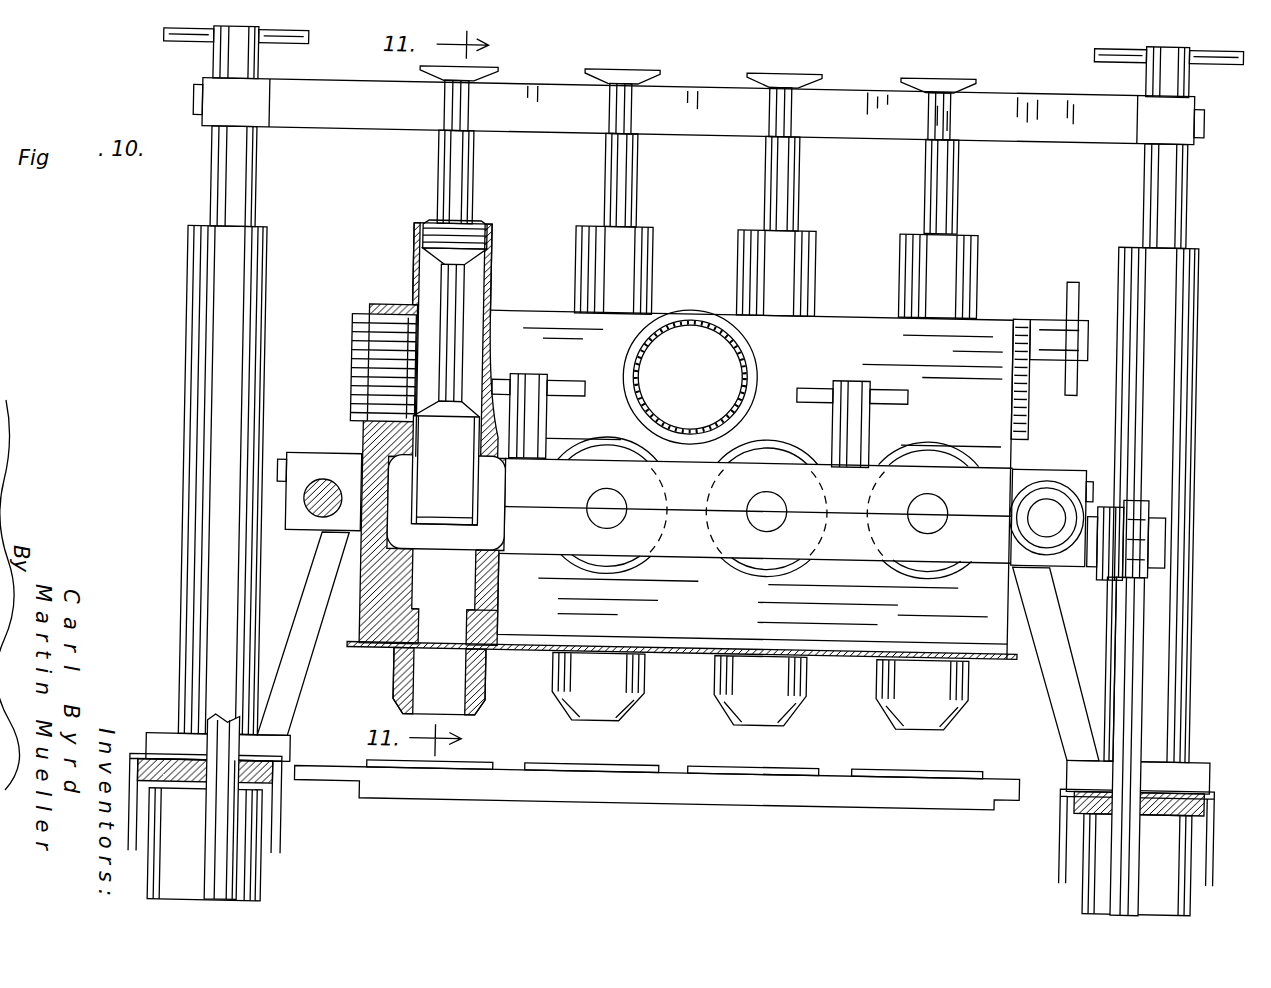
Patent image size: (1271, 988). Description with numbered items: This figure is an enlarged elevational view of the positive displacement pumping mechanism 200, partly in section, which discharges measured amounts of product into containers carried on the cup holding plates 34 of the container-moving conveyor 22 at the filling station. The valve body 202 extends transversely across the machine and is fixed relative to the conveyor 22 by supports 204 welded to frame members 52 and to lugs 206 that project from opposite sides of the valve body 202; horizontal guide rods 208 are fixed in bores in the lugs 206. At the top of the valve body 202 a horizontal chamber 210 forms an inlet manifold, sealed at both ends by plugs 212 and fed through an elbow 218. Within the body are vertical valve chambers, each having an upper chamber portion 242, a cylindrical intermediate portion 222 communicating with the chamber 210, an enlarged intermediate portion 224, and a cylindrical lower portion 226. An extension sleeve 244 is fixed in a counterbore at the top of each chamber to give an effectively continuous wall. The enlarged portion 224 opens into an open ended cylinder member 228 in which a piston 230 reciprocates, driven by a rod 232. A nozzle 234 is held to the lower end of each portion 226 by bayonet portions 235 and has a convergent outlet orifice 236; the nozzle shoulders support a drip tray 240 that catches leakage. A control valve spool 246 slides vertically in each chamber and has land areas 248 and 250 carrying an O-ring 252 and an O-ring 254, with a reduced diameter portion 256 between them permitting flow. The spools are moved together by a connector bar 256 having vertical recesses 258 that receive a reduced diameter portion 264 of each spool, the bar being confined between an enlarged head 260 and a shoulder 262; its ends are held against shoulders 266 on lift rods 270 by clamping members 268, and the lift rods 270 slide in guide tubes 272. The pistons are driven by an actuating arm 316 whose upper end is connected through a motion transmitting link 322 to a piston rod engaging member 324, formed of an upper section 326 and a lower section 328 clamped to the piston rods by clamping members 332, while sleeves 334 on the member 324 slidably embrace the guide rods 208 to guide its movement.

The container-moving conveyor 22 is at (516, 815).
The cup holding plates 34 is at (690, 800).
The frame members 52 is at (290, 830).
The positive displacement pumping mechanism 200 is at (380, 206).
The valve body 202 is at (990, 318).
The supports 204 is at (310, 688).
The lugs 206 is at (298, 459).
The guide rods 208 is at (318, 508).
The chamber 210 is at (498, 335).
The plugs 212 is at (352, 358).
The elbow 218 is at (755, 334).
The cylindrical intermediate portion 222 is at (432, 462).
The enlarged intermediate portion 224 is at (392, 465).
The cylindrical lower portion 226 is at (492, 580).
The cylinder member 228 is at (626, 568).
The piston 230 is at (926, 560).
The rod 232 is at (764, 492).
The nozzle 234 is at (566, 674).
The bayonet portions 235 is at (494, 620).
The convergent outlet orifice 236 is at (470, 718).
The drip tray 240 is at (676, 656).
The upper chamber portion 242 is at (412, 318).
The extension sleeve 244 is at (580, 273).
The control valve spool 246 is at (588, 181).
The land area 248 is at (482, 224).
The land area 250 is at (475, 505).
The O-ring 252 is at (410, 244).
The O-ring 254 is at (478, 522).
The connector bar 256 is at (1054, 104).
The vertical recesses 258 is at (940, 108).
The enlarged head 260 is at (930, 74).
The shoulder 262 is at (626, 128).
The reduced diameter portion 264 is at (598, 112).
The shoulders 266 is at (256, 142).
The clamping members 268 is at (240, 64).
The lift rods 270 is at (210, 204).
The guide tubes 272 is at (240, 900).
The actuating arm 316 is at (1128, 636).
The motion transmitting link 322 is at (1130, 566).
The piston rod engaging member 324 is at (864, 578).
The upper section 326 is at (712, 470).
The lower section 328 is at (698, 552).
The clamping members 332 is at (540, 417).
The sleeves 334 is at (1030, 488).